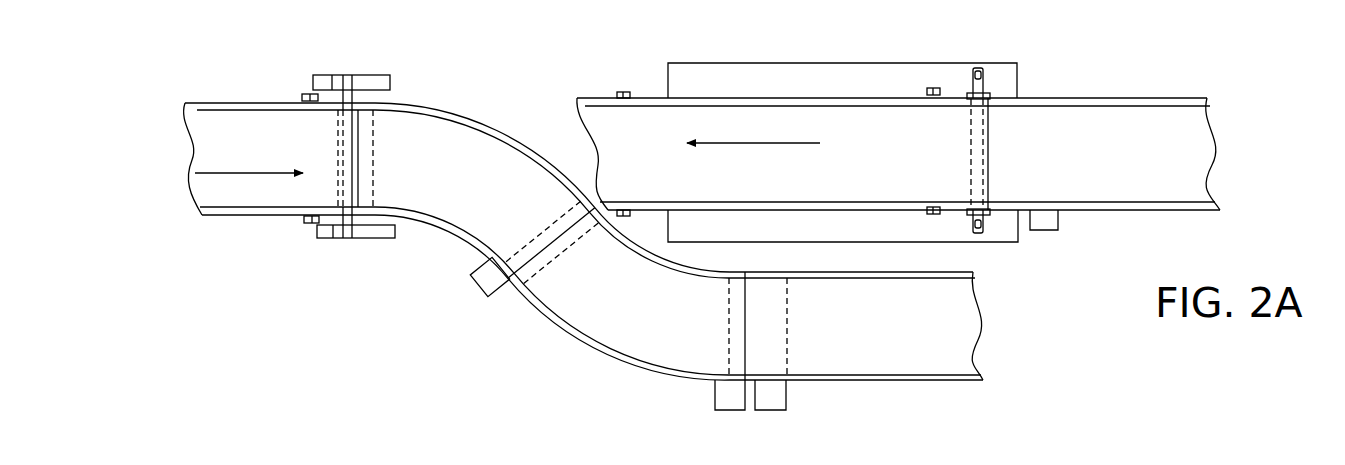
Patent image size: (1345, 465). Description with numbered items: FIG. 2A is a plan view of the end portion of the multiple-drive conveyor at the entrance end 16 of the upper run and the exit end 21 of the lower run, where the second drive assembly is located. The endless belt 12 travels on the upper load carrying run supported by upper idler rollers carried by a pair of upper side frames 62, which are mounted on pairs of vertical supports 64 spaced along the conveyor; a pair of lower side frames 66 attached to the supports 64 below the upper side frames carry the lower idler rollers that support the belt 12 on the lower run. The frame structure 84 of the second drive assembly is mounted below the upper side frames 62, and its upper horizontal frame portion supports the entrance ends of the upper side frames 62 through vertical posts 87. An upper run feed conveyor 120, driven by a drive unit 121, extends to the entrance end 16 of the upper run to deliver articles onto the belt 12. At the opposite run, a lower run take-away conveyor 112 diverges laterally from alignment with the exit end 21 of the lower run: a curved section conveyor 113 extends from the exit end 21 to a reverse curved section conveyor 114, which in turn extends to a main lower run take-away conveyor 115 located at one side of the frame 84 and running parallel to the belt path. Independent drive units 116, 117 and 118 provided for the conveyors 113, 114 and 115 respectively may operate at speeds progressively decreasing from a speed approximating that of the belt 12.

The endless belt 12 is at (823, 189).
The entrance end of the upper run 16 is at (989, 185).
The exit end of the lower run 21 is at (357, 150).
The upper side frames 62 is at (652, 98).
The vertical supports 64 is at (302, 93).
The lower side frames 66 is at (243, 102).
The frame structure 84 is at (985, 242).
The vertical posts 87 is at (930, 88).
The lower run take-away conveyor 112 is at (552, 248).
The curved section conveyor 113 is at (497, 131).
The reverse curved section conveyor 114 is at (617, 357).
The main lower run take-away conveyor 115 is at (913, 381).
The drive unit 116 is at (470, 277).
The drive unit 117 is at (715, 405).
The drive unit 118 is at (786, 404).
The upper run feed conveyor 120 is at (1155, 211).
The drive unit 121 is at (1058, 222).